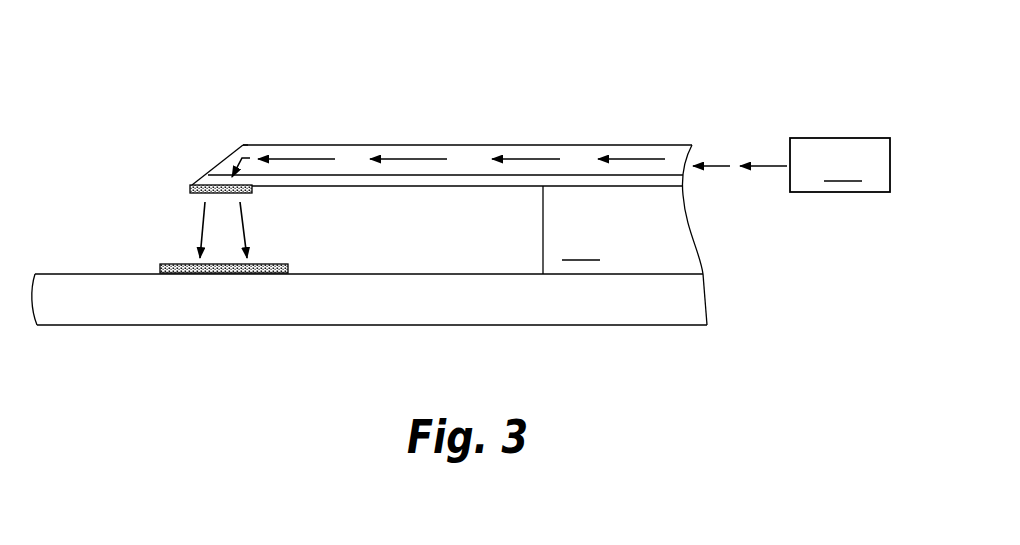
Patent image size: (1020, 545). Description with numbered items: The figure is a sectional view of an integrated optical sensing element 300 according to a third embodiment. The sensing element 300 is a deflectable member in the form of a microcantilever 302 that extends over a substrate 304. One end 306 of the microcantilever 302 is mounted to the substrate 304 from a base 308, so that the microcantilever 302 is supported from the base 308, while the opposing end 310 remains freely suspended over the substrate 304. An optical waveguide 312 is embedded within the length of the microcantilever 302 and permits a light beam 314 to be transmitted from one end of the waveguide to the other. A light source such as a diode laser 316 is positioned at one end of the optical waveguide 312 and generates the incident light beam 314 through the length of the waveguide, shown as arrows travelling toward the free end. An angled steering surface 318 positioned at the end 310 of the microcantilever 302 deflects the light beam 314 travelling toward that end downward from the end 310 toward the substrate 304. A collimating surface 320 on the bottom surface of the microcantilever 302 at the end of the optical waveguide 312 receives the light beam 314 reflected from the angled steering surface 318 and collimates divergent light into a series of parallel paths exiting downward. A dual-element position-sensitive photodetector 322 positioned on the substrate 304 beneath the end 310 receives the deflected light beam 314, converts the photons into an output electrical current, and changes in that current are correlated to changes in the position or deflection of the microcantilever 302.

The integrated optical sensing element 300 is at (682, 68).
The microcantilever 302 is at (427, 145).
The substrate 304 is at (625, 312).
The one end of the microcantilever 306 is at (667, 135).
The base 308 is at (572, 230).
The opposing end of the microcantilever 310 is at (260, 128).
The optical waveguide 312 is at (423, 178).
The light beam 314 is at (245, 230).
The diode laser 316 is at (840, 165).
The angled steering surface 318 is at (222, 162).
The collimating surface 320 is at (188, 188).
The dual-element position-sensitive photodetector 322 is at (167, 252).